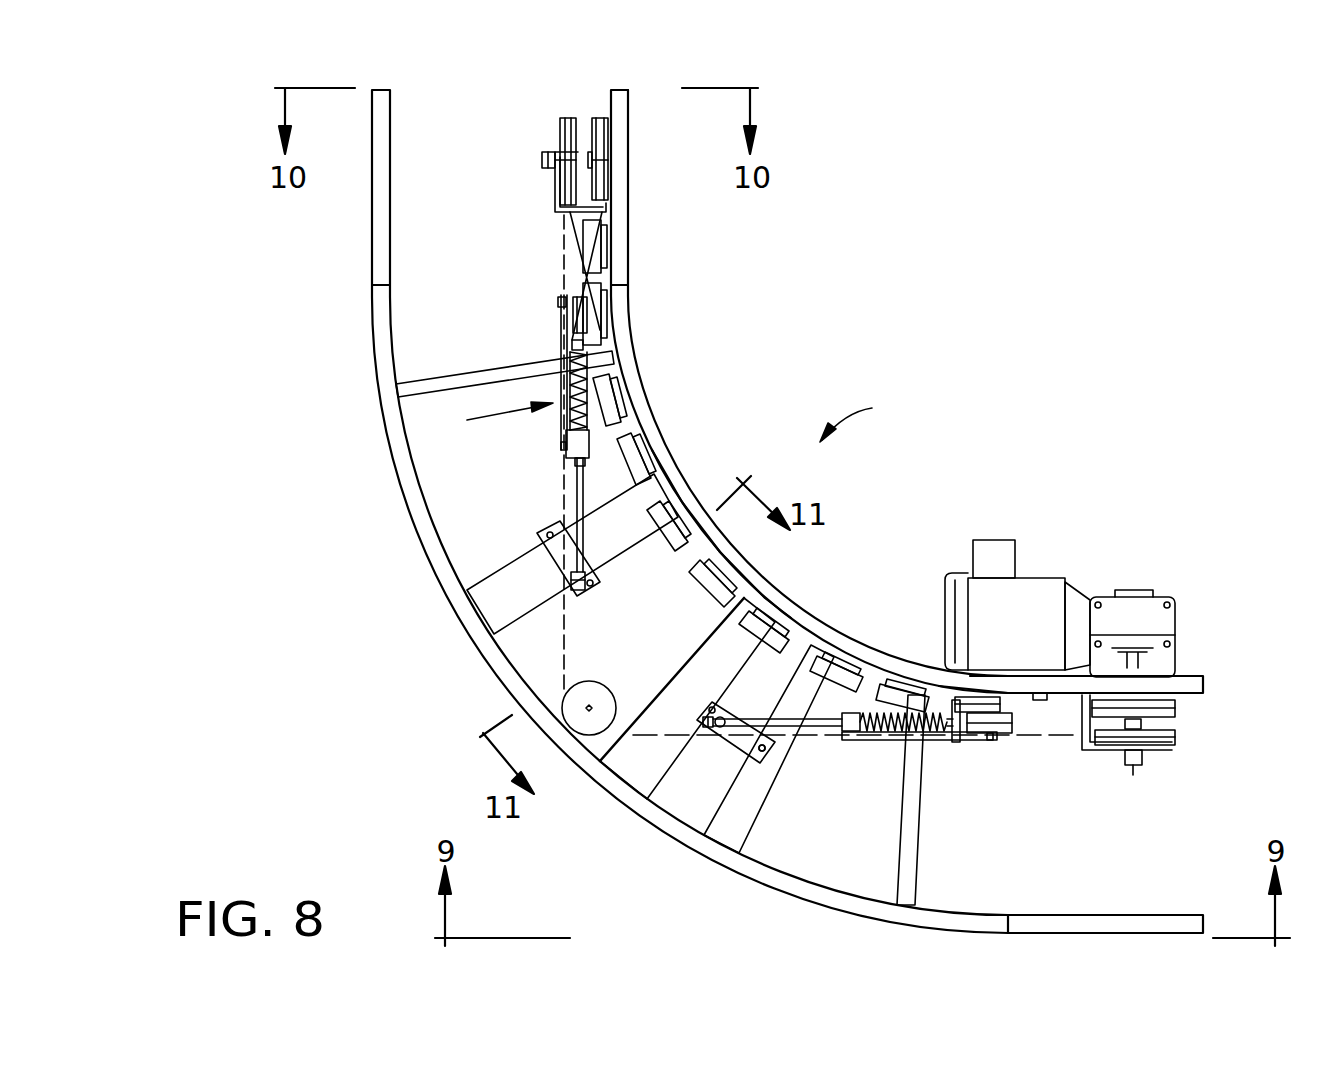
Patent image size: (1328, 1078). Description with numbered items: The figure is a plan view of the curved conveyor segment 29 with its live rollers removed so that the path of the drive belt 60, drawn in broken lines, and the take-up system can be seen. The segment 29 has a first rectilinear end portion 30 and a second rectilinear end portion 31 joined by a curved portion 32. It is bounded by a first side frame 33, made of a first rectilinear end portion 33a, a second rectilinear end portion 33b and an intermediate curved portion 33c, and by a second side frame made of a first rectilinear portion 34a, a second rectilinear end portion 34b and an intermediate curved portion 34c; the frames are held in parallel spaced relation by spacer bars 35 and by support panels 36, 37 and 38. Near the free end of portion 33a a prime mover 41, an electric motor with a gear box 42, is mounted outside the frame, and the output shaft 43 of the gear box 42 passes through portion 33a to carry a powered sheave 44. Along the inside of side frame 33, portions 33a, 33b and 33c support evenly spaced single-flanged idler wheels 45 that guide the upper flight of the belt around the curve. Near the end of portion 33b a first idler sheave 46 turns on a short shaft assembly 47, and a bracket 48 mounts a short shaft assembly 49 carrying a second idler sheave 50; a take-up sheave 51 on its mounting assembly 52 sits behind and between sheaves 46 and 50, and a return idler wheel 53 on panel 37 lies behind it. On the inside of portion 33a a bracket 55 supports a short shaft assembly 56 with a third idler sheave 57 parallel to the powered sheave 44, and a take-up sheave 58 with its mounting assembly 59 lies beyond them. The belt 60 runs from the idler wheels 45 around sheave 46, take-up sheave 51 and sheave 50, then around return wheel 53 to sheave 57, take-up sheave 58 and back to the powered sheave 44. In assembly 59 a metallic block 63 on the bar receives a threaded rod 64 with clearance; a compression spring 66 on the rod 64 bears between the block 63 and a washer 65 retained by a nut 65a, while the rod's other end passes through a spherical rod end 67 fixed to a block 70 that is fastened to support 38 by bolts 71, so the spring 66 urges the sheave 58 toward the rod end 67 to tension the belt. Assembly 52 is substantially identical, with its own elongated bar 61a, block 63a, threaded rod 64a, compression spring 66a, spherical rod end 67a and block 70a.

The conveyor segment 29 is at (869, 416).
The first rectilinear end portion 30 is at (615, 262).
The second rectilinear end portion 31 is at (1205, 682).
The curved portion 32 is at (622, 312).
The first side frame 33 is at (632, 354).
The first rectilinear end portion 33a is at (1205, 694).
The second rectilinear end portion 33b is at (620, 242).
The intermediate curved portion 33c is at (667, 477).
The first rectilinear portion 34a is at (1150, 914).
The second rectilinear end portion 34b is at (375, 228).
The intermediate curved portion 34c is at (642, 808).
The spacer bars 35 is at (471, 372).
The support panel 36 is at (496, 580).
The support panel 37 is at (748, 600).
The support panel 38 is at (790, 680).
The prime mover 41 is at (1032, 598).
The gear box 42 is at (1140, 600).
The output shaft 43 is at (1150, 668).
The powered sheave 44 is at (1175, 712).
The idler wheel 45 is at (618, 410).
The first idler sheave 46 is at (600, 126).
The short shaft assembly 47 is at (608, 163).
The bracket 48 is at (555, 198).
The short shaft assembly 49 is at (540, 161).
The second idler sheave 50 is at (560, 126).
The take-up sheave 51 is at (576, 300).
The mounting assembly 52 is at (491, 420).
The return idler wheel 53 is at (600, 698).
The bracket 55 is at (1090, 727).
The short shaft assembly 56 is at (1130, 766).
The third idler sheave 57 is at (1165, 747).
The take-up sheave 58 is at (1010, 735).
The mounting assembly 59 is at (866, 752).
The drive belt 60 is at (564, 618).
The elongated bar 61a is at (573, 444).
The metallic block 63 is at (850, 732).
The metallic block 63a is at (560, 447).
The threaded rod 64 is at (818, 727).
The threaded rod 64a is at (577, 492).
The washer 65 is at (957, 744).
The nut 65a is at (575, 345).
The compression spring 66 is at (905, 740).
The compression spring 66a is at (567, 400).
The spherical rod end 67 is at (725, 718).
The spherical rod end 67a is at (568, 576).
The block 70 is at (745, 744).
The block 70a is at (570, 552).
The bolts 71 is at (715, 712).